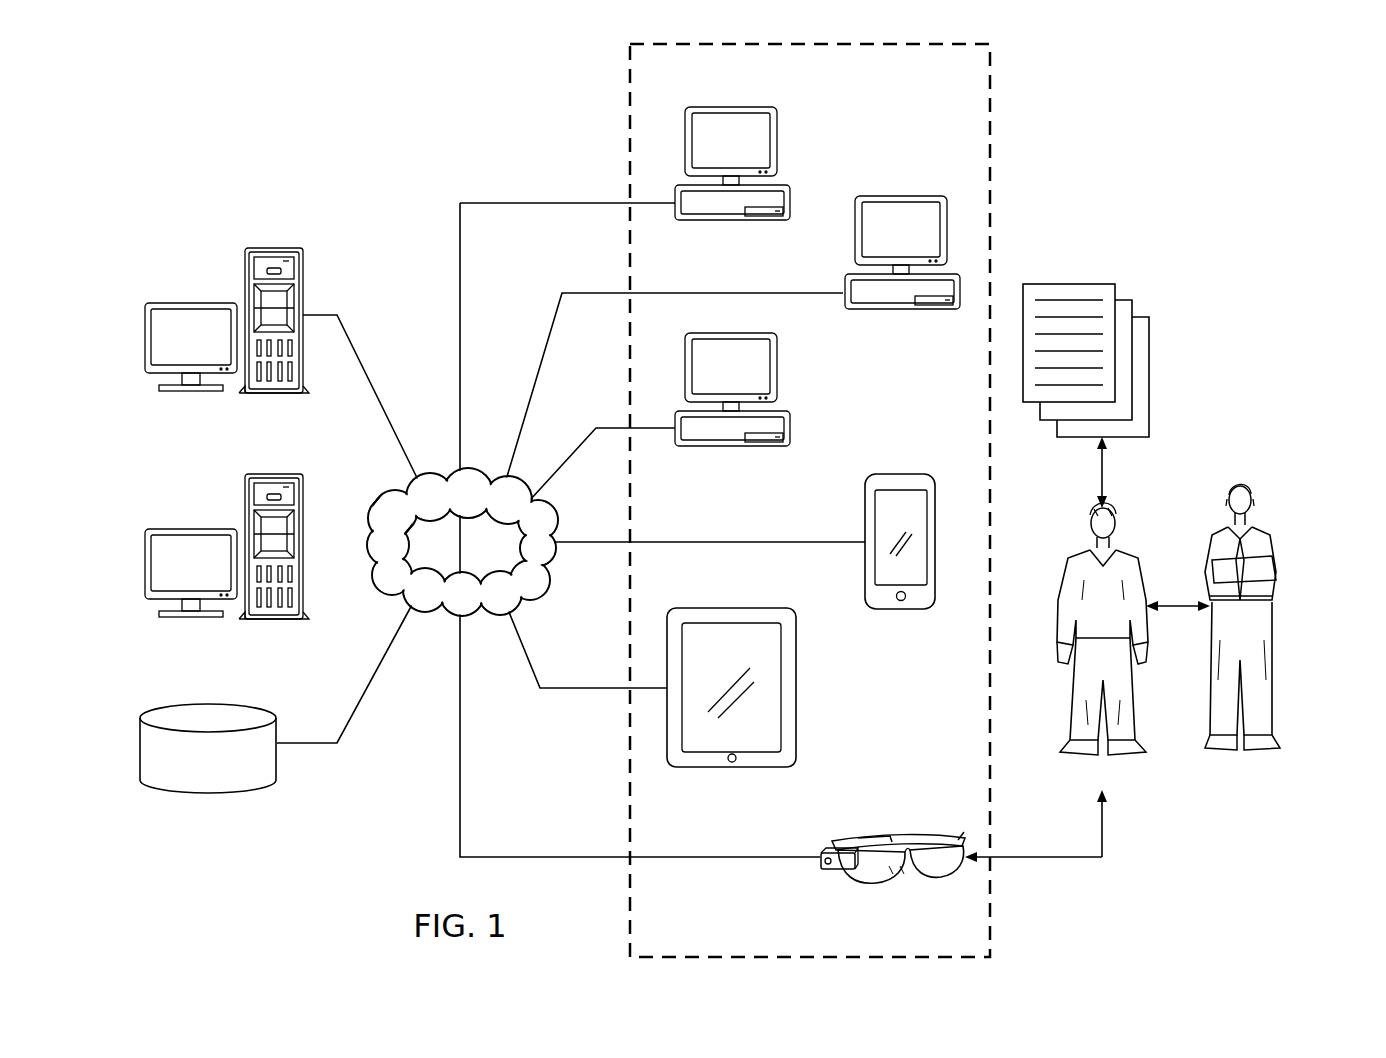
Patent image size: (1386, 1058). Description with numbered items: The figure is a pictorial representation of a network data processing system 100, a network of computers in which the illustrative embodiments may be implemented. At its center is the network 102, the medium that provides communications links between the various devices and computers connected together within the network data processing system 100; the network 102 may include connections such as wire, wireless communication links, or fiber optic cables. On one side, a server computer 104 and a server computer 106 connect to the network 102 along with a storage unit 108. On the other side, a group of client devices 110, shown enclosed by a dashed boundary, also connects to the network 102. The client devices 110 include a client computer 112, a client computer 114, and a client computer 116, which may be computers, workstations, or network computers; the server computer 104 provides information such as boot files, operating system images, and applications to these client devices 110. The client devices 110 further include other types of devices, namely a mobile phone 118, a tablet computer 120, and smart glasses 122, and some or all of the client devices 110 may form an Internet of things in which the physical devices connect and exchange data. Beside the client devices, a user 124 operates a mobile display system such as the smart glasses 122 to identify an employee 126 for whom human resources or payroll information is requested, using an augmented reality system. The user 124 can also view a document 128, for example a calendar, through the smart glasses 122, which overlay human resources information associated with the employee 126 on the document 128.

The network data processing system 100 is at (326, 120).
The network 102 is at (440, 572).
The server computer 104 is at (186, 303).
The server computer 106 is at (186, 529).
The storage unit 108 is at (207, 794).
The client devices 110 is at (998, 122).
The client computer 112 is at (778, 140).
The client computer 114 is at (908, 196).
The client computer 116 is at (778, 366).
The mobile phone 118 is at (864, 558).
The tablet computer 120 is at (797, 700).
The smart glasses 122 is at (946, 834).
The user 124 is at (1128, 553).
The employee 126 is at (1276, 536).
The document 128 is at (1072, 276).